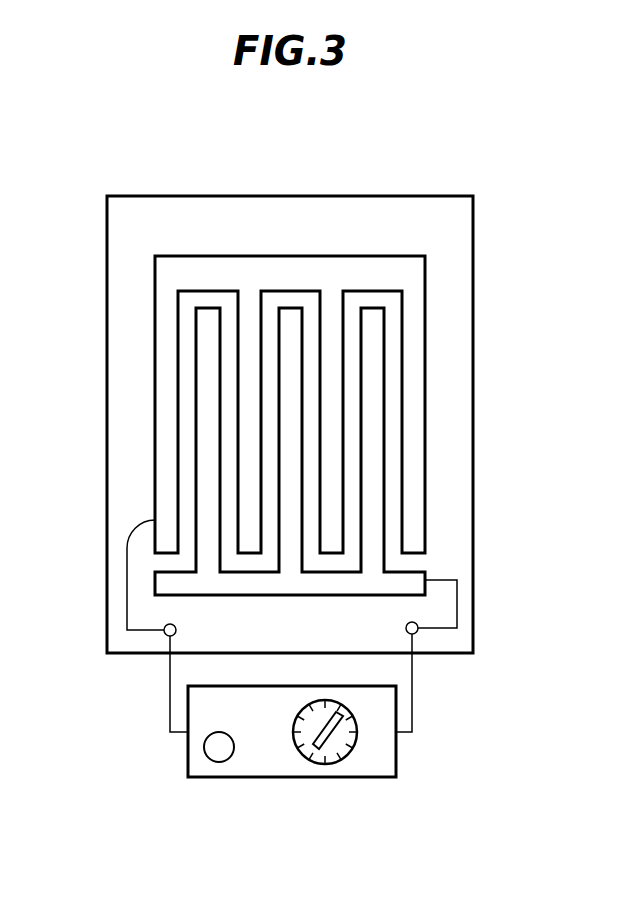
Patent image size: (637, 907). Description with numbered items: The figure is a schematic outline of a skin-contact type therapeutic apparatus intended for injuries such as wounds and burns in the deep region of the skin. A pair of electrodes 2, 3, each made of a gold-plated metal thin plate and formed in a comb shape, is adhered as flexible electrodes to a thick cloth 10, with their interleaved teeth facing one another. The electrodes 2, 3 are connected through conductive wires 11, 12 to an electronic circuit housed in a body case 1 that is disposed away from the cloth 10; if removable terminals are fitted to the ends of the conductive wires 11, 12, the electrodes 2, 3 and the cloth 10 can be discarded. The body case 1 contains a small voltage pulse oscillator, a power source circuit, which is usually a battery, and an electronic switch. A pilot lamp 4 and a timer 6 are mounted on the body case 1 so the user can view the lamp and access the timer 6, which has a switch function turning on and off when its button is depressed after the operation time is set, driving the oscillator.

The body case 1 is at (388, 760).
The electrode 2 is at (417, 294).
The electrode 3 is at (410, 575).
The pilot lamp 4 is at (210, 750).
The timer 6 is at (335, 765).
The cloth 10 is at (458, 385).
The conductive wire 11 is at (127, 595).
The conductive wire 12 is at (435, 630).